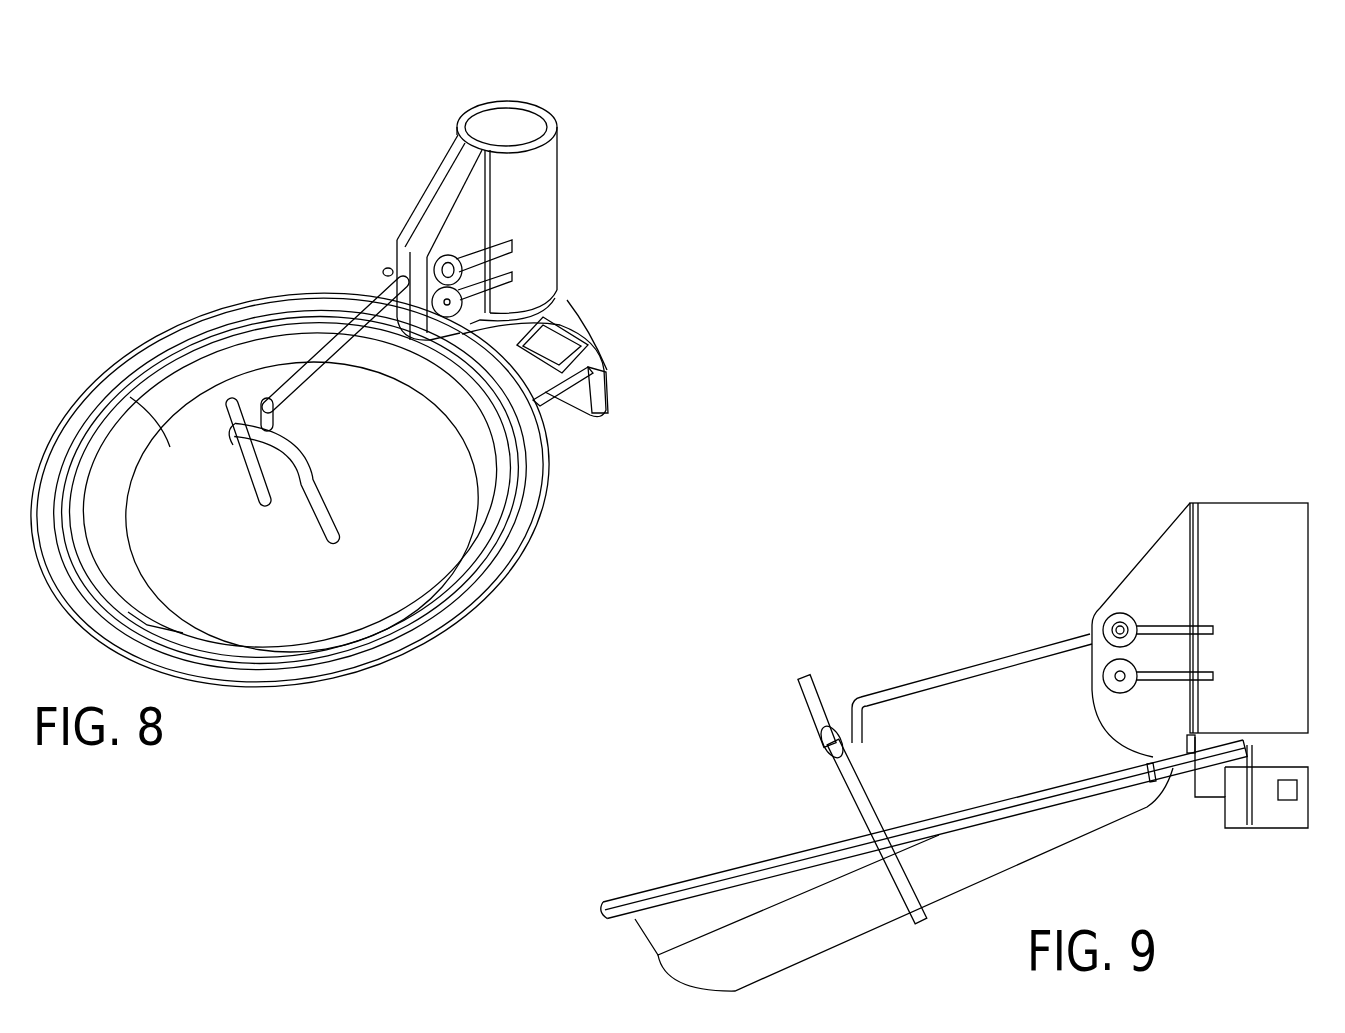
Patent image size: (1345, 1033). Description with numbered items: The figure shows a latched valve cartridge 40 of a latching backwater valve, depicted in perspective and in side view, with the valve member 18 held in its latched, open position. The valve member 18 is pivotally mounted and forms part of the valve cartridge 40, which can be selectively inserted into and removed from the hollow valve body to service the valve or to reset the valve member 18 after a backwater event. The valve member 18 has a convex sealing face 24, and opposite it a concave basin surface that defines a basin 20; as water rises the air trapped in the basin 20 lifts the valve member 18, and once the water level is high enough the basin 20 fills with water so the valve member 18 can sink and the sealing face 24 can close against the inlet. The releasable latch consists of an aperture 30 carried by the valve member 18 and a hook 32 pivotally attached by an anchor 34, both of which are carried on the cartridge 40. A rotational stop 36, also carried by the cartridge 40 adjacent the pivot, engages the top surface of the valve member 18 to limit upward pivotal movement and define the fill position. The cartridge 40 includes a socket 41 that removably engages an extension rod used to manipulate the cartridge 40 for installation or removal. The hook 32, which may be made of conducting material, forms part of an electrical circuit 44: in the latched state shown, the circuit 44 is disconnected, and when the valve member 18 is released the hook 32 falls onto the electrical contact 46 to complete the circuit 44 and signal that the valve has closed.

In FIG. 8, the valve member 18 is at (417, 630).
In FIG. 9, the valve member 18 is at (603, 912).
In FIG. 8, the basin 20 is at (405, 512).
In FIG. 9, the basin 20 is at (763, 895).
In FIG. 9, the convex sealing face 24 is at (833, 942).
In FIG. 8, the aperture 30 is at (297, 465).
In FIG. 9, the aperture 30 is at (860, 800).
In FIG. 8, the hook 32 is at (297, 378).
In FIG. 9, the hook 32 is at (890, 692).
In FIG. 8, the anchor 34 is at (413, 260).
In FIG. 9, the anchor 34 is at (1115, 620).
In FIG. 8, the rotational stop 36 is at (530, 326).
In FIG. 9, the rotational stop 36 is at (1147, 763).
In FIG. 8, the valve cartridge 40 is at (230, 204).
In FIG. 9, the valve cartridge 40 is at (970, 574).
In FIG. 8, the socket 41 is at (540, 128).
In FIG. 9, the socket 41 is at (1238, 503).
In FIG. 8, the electrical circuit 44 is at (522, 247).
In FIG. 9, the electrical circuit 44 is at (1162, 623).
In FIG. 8, the electrical contact 46 is at (447, 302).
In FIG. 9, the electrical contact 46 is at (1113, 675).